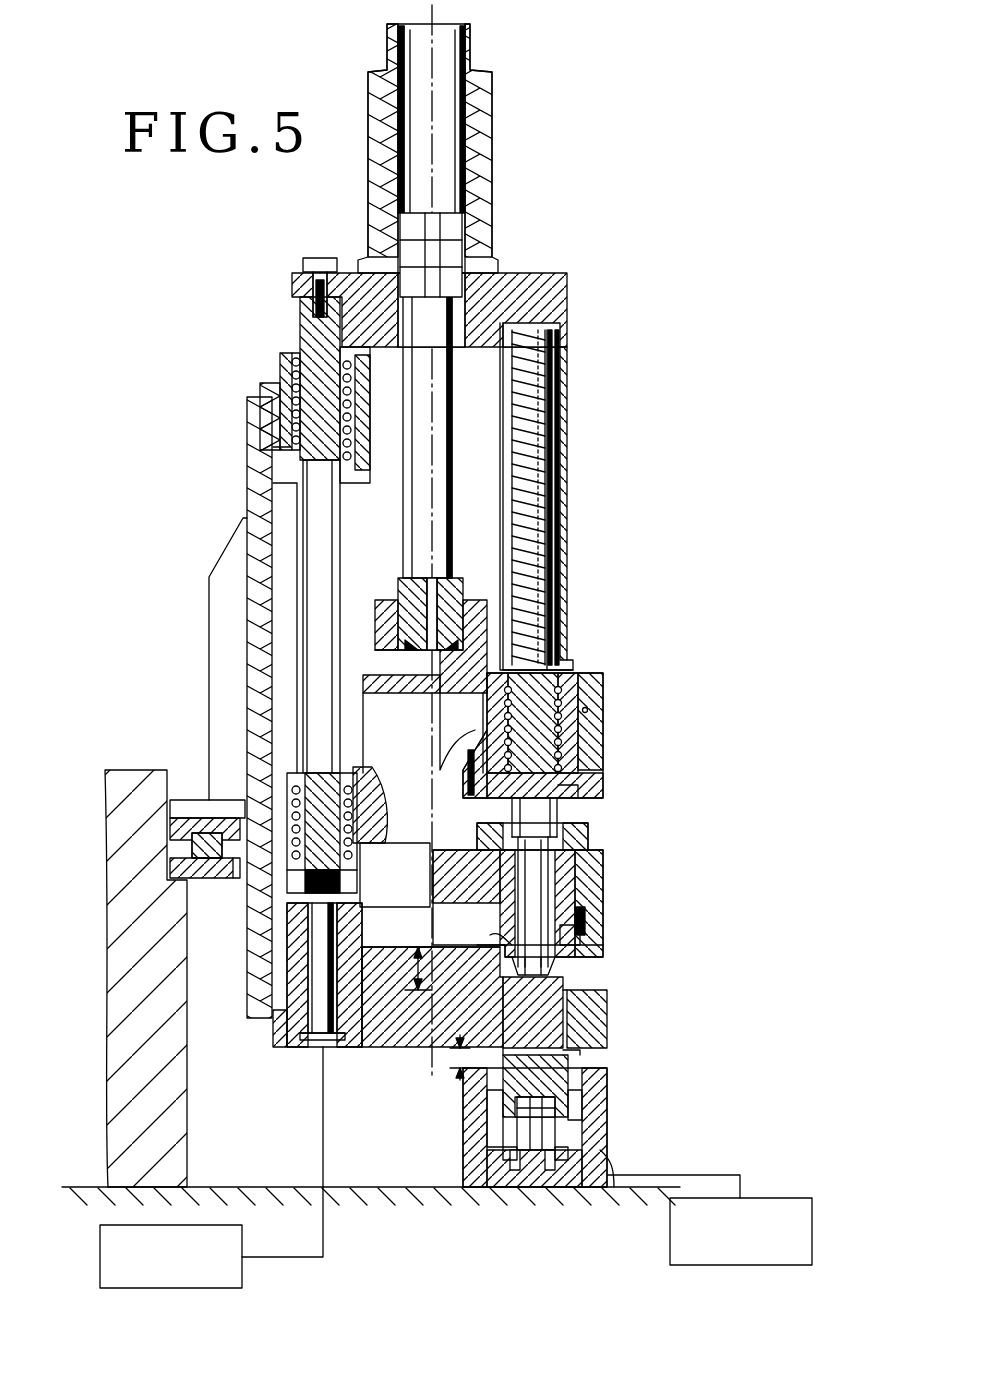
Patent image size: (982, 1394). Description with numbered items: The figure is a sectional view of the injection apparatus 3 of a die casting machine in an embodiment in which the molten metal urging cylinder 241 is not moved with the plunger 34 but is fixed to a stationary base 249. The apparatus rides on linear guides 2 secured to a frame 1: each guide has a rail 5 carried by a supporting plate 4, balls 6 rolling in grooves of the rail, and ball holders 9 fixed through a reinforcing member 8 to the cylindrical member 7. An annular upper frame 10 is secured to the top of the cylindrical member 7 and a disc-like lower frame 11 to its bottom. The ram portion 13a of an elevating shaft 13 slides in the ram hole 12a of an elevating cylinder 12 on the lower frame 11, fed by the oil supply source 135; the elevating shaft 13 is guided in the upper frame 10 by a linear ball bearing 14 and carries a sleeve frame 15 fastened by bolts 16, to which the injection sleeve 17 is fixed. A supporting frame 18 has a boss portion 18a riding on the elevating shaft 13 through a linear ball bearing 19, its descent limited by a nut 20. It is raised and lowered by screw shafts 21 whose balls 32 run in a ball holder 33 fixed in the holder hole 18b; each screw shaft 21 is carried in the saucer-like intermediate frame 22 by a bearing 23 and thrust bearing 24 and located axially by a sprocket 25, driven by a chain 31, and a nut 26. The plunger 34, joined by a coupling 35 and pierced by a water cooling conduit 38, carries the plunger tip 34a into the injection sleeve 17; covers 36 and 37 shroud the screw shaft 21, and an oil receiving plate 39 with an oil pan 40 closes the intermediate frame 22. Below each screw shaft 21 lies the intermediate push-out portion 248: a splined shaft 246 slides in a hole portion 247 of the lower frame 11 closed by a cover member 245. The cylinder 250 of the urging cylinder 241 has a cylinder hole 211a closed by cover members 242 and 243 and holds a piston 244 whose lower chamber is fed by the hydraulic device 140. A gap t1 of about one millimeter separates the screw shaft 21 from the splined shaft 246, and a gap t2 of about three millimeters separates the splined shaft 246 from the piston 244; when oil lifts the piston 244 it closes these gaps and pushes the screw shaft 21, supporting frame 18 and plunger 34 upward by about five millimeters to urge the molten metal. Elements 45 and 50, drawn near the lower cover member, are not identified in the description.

The frame 1 is at (172, 800).
The linear guide 2 is at (211, 885).
The injection apparatus 3 is at (536, 266).
The supporting plate 4 is at (234, 880).
The rail 5 is at (197, 878).
The balls 6 is at (200, 848).
The cylindrical member 7 is at (247, 432).
The reinforcing member 8 is at (230, 553).
The ball holder 9 is at (183, 830).
The upper frame 10 is at (280, 357).
The lower frame 11 is at (386, 1052).
The elevating cylinder 12 is at (362, 950).
The ram hole 12a is at (300, 1048).
The elevating shaft 13 is at (293, 612).
The ram portion 13a is at (320, 1000).
The linear ball bearing 14 is at (283, 378).
The sleeve frame 15 is at (567, 273).
The bolts 16 is at (321, 256).
The injection sleeve 17 is at (472, 52).
The supporting frame 18 is at (600, 673).
The boss portion 18a is at (356, 860).
The holder hole 18b is at (586, 705).
The linear ball bearing 19 is at (290, 773).
The nut 20 is at (350, 891).
The screw shaft 21 is at (562, 563).
The intermediate frame 22 is at (612, 858).
The bearing 23 is at (560, 900).
The thrust bearing 24 is at (568, 852).
The sprocket 25 is at (585, 945).
The nut 26 is at (560, 975).
The chain 31 is at (590, 918).
The balls 32 is at (562, 732).
The ball holder 33 is at (603, 785).
The plunger 34 is at (458, 456).
The plunger tip 34a is at (463, 228).
The coupling 35 is at (481, 600).
The cover 36 is at (568, 378).
The cover 37 is at (563, 636).
The water cooling conduit 38 is at (430, 578).
The oil receiving plate 39 is at (605, 962).
The oil pan 40 is at (495, 940).
The valve port 45 is at (588, 1190).
The drain passage 50 is at (612, 1180).
The oil supply source 135 is at (100, 1250).
The hydraulic device 140 is at (780, 1198).
The cylinder hole 211a is at (582, 1108).
The molten metal urging cylinder 241 is at (612, 1136).
The cover member 242 is at (572, 1077).
The cover member 243 is at (521, 1190).
The piston 244 is at (550, 1190).
The cover member 245 is at (575, 1052).
The splined shaft 246 is at (545, 985).
The hole portion 247 is at (577, 1003).
The intermediate push-out portion 248 is at (612, 1036).
The stationary base 249 is at (418, 1195).
The cylinder 250 is at (465, 1120).
The gap t1 is at (410, 968).
The gap t2 is at (457, 1073).